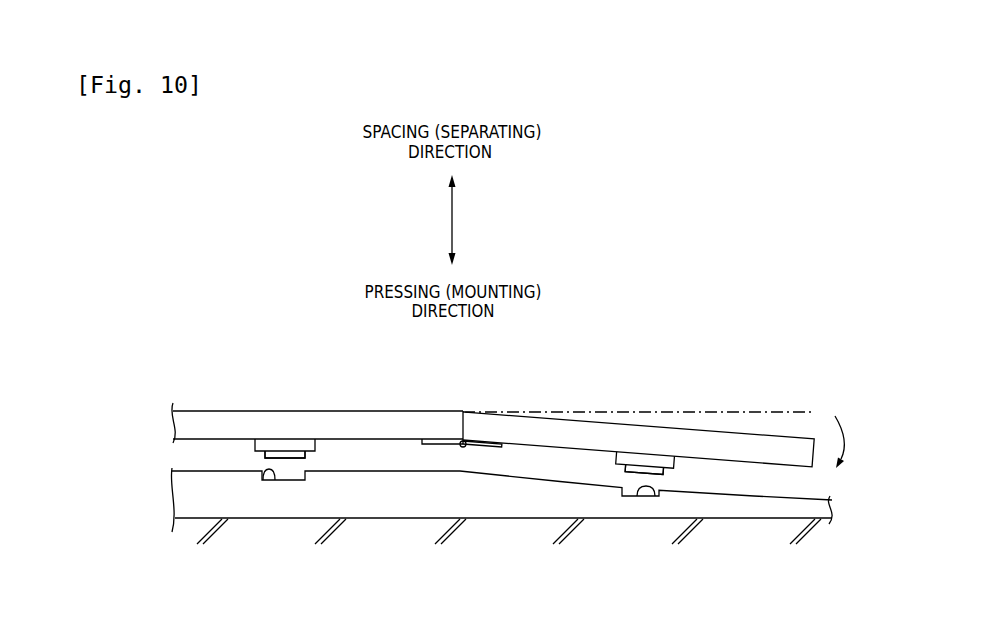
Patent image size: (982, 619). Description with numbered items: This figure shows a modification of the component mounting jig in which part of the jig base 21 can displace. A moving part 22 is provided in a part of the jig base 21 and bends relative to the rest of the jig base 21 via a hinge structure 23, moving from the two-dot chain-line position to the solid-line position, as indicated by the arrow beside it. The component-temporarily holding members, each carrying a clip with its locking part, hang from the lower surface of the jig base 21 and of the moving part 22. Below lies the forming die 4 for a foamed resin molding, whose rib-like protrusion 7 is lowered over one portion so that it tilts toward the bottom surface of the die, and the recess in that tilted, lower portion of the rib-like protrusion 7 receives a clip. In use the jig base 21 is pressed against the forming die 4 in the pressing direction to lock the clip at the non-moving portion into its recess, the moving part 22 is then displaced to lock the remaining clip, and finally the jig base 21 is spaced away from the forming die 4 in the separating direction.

The forming die 4 is at (188, 518).
The rib-like protrusion 7 is at (483, 503).
The jig base 21 is at (283, 410).
The moving part 22 is at (783, 438).
The hinge structure 23 is at (463, 446).